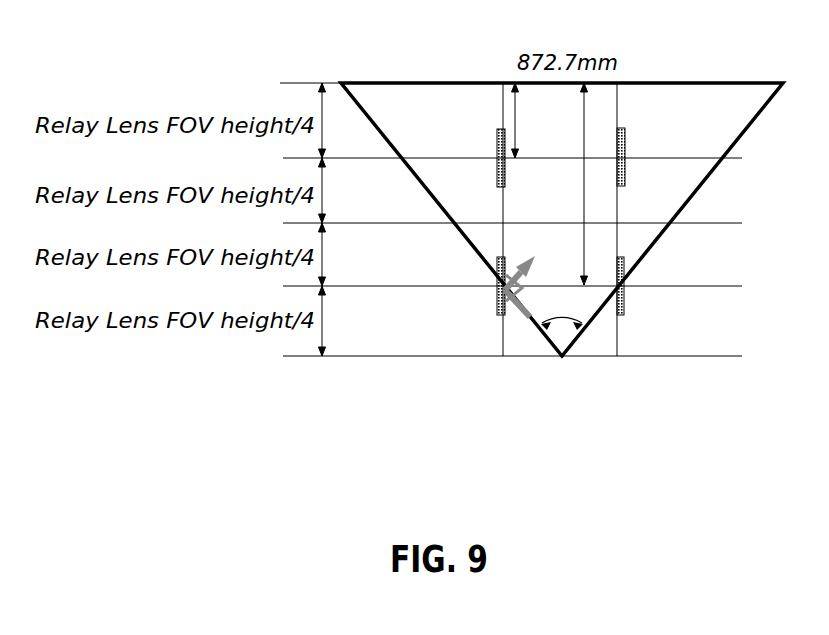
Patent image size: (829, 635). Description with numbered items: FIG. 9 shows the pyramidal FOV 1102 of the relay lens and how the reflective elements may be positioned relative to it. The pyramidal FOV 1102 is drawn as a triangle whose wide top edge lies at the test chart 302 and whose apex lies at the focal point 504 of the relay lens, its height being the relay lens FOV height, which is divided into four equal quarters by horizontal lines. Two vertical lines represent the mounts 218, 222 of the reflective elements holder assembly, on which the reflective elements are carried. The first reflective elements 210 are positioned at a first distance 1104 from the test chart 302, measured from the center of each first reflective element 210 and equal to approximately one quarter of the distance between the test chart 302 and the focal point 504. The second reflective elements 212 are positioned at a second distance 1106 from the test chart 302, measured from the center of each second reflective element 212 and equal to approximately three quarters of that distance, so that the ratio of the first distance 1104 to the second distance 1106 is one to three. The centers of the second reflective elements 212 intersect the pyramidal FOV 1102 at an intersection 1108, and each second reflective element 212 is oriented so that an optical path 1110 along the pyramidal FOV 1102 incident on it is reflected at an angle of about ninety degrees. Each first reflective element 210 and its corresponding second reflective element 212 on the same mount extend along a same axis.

The test chart 302 is at (748, 80).
The mount 222 is at (502, 108).
The mount 218 is at (618, 105).
The first reflective element 210 is at (497, 143).
The second reflective element 212 is at (497, 300).
The first distance 1104 is at (543, 120).
The second distance 1106 is at (559, 184).
The pyramidal FOV 1102 is at (593, 320).
The intersection 1108 is at (497, 284).
The optical path 1110 is at (523, 318).
The focal point 504 is at (563, 360).